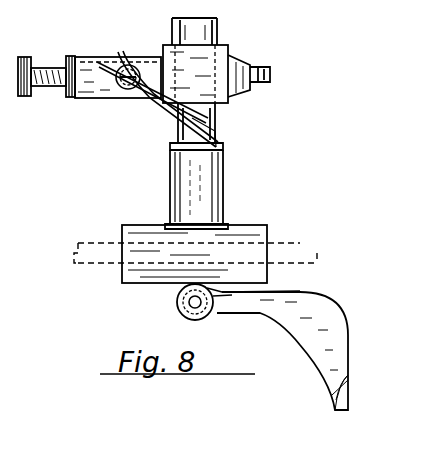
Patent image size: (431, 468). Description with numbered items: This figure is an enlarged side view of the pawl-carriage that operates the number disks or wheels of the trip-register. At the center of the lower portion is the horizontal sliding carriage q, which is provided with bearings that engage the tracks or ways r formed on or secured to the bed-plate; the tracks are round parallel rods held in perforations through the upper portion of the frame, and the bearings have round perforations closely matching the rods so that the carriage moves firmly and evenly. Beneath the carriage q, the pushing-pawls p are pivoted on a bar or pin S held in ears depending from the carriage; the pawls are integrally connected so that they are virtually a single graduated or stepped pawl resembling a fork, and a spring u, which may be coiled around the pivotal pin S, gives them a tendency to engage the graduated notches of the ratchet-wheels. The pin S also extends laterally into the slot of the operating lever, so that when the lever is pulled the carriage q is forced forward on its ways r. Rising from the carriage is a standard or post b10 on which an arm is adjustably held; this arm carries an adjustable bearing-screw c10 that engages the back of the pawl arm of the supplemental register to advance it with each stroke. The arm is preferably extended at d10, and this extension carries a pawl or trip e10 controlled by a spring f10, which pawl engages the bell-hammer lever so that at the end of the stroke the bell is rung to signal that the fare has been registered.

The adjustable bearing-screw c10 is at (51, 87).
The extension of the arm d10 is at (89, 62).
The spring f10 is at (162, 113).
The pawl or trip e10 is at (216, 126).
The standard or post b10 is at (212, 172).
The horizontal sliding carriage q is at (194, 254).
The tracks or ways r is at (300, 253).
The bar or pin S is at (189, 303).
The spring u is at (280, 292).
The pushing-pawls p is at (335, 314).